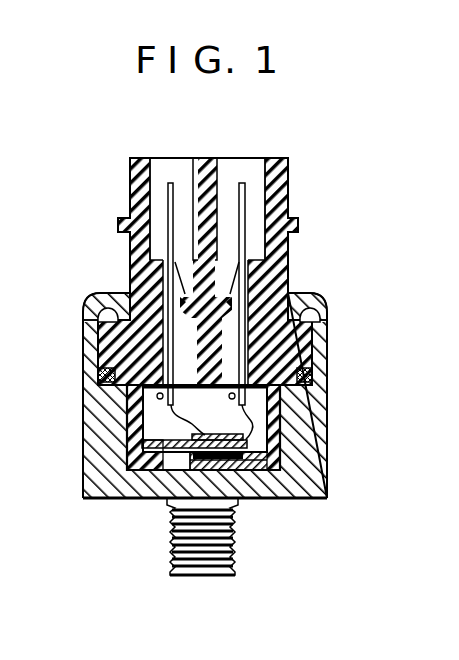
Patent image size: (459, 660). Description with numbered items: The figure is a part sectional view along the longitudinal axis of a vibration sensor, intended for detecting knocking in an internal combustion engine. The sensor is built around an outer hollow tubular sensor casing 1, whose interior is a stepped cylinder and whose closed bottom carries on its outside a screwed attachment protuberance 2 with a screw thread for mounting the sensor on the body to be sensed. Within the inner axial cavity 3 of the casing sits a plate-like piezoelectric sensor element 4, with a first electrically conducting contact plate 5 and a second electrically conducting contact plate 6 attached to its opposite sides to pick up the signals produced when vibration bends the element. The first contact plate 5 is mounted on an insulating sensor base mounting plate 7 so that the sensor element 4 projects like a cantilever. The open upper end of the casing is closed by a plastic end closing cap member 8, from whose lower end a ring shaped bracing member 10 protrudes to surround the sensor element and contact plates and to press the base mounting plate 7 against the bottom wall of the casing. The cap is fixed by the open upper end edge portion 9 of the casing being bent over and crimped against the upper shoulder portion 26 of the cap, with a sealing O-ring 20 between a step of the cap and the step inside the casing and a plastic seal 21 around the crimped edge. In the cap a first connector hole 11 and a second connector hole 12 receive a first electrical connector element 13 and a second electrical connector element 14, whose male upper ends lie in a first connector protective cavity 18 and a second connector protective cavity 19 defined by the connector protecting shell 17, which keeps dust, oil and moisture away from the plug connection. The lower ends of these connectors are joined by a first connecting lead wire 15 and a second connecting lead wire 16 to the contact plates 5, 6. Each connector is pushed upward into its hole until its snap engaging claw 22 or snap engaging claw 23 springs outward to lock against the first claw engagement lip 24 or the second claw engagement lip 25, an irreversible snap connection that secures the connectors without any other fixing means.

The outer hollow tubular sensor casing 1 is at (318, 435).
The screwed attachment protuberance 2 is at (240, 540).
The inner axial cavity 3 is at (137, 412).
The sensor element 4 is at (162, 443).
The first electrically conducting contact plate 5 is at (231, 466).
The second electrically conducting contact plate 6 is at (213, 430).
The insulating sensor base mounting plate 7 is at (214, 466).
The end closing cap member 8 is at (280, 292).
The open upper end edge portion 9 is at (313, 302).
The ring shaped bracing member 10 is at (276, 410).
The first connector hole 11 is at (228, 361).
The second connector hole 12 is at (188, 358).
The first electrical connector element 13 is at (252, 192).
The second electrical connector element 14 is at (167, 184).
The first connecting lead wire 15 is at (254, 424).
The second connecting lead wire 16 is at (198, 432).
The connector protecting shell 17 is at (279, 181).
The first connector protective cavity 18 is at (257, 222).
The second connector protective cavity 19 is at (158, 221).
The sealing O-ring 20 is at (98, 375).
The plastic seal 21 is at (108, 296).
The snap engaging claw 22 is at (229, 303).
The snap engaging claw 23 is at (184, 290).
The first claw engagement lip 24 is at (236, 326).
The second claw engagement lip 25 is at (183, 328).
The upper shoulder portion 26 is at (322, 316).